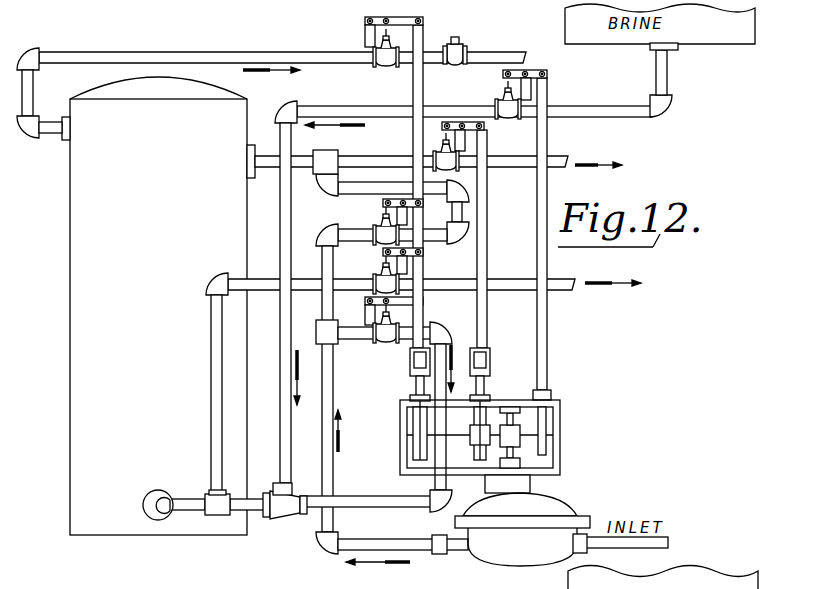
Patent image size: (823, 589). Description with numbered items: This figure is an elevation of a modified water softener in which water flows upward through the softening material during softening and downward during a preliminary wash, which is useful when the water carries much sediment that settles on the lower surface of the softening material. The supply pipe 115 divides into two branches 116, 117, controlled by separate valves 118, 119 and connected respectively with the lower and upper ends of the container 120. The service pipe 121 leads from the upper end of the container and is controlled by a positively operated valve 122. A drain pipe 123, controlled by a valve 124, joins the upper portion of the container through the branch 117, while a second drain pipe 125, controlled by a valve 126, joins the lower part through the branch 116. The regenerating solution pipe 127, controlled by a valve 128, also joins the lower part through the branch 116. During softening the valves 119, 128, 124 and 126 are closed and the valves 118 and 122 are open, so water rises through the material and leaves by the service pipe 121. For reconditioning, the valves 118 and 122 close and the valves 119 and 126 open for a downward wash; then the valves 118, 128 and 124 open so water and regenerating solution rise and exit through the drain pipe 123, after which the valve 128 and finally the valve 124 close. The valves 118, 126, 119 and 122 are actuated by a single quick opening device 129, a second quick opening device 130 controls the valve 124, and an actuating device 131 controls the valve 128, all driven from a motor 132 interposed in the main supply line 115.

The supply pipe 115 is at (356, 547).
The branch of the supply pipe 116 is at (441, 381).
The branch of the supply pipe 117 is at (369, 232).
The valve 118 is at (388, 338).
The valve 119 is at (388, 240).
The container 120 is at (83, 343).
The service pipe 121 is at (160, 58).
The positively operated valve 122 is at (387, 60).
The drain pipe 123 is at (562, 160).
The valve 124 is at (435, 158).
The second drain pipe 125 is at (568, 284).
The valve 126 is at (390, 288).
The regenerating solution pipe 127 is at (562, 108).
The valve 128 is at (500, 108).
The quick opening device 129 is at (410, 366).
The second quick opening device 130 is at (490, 364).
The actuating device 131 is at (548, 448).
The motor 132 is at (525, 506).